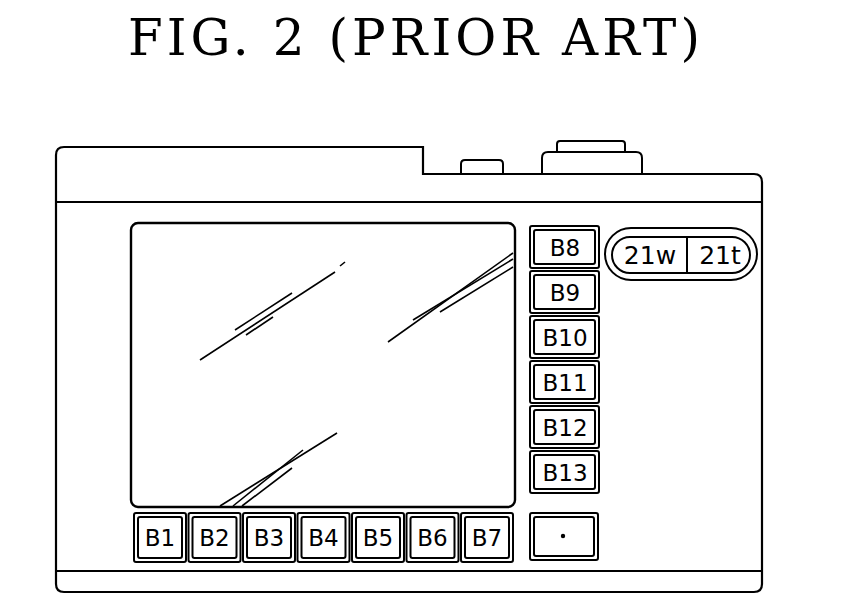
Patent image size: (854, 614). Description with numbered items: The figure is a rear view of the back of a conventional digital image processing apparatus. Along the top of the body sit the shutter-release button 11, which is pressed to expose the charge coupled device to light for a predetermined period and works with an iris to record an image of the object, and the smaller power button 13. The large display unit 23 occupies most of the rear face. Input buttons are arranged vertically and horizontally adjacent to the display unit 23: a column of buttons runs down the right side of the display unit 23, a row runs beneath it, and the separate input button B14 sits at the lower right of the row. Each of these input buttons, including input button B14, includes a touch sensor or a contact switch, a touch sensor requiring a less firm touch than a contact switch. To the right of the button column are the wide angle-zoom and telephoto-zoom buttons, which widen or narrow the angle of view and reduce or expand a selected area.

The display unit 23 is at (210, 240).
The power button 13 is at (481, 162).
The shutter-release button 11 is at (593, 142).
The input button B14 is at (598, 536).